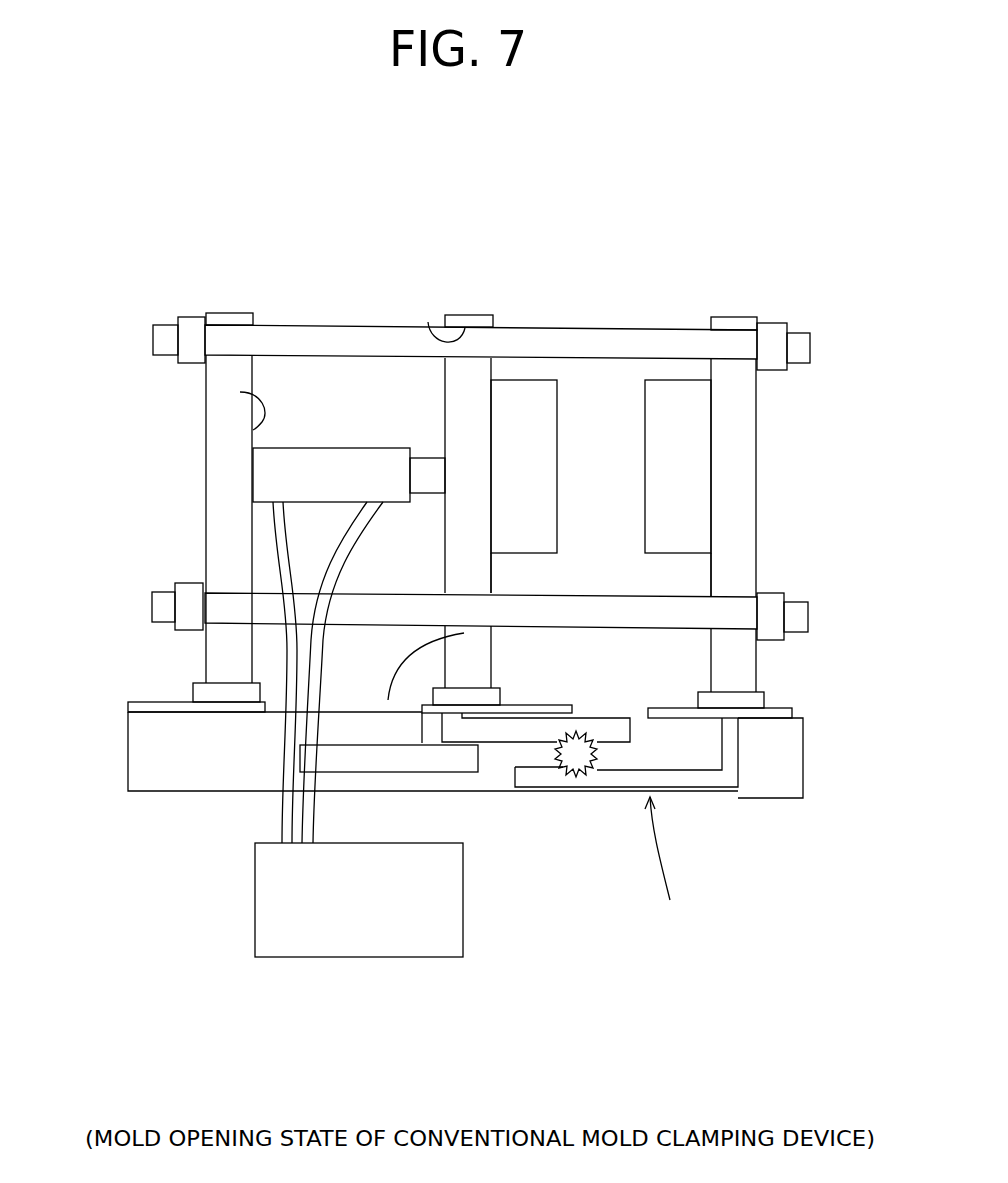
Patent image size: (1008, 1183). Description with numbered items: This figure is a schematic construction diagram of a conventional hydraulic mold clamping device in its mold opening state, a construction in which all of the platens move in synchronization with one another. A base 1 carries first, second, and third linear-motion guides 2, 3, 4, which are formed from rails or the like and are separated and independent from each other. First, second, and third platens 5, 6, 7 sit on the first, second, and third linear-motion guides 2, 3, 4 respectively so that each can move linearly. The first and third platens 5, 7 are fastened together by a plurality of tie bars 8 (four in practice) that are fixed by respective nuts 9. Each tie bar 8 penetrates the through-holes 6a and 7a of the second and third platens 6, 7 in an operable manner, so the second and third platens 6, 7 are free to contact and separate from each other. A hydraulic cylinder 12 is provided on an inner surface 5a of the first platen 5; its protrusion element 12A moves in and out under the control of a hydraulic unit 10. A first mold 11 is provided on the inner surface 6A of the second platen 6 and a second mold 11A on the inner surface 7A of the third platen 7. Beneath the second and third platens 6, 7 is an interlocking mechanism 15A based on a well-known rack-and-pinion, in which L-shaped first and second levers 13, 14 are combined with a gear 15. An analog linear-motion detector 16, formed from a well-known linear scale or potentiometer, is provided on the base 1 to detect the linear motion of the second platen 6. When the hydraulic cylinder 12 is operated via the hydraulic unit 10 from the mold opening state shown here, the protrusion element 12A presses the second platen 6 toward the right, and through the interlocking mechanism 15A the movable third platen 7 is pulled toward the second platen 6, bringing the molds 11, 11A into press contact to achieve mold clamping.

The base 1 is at (210, 772).
The first linear-motion guide 2 is at (187, 700).
The second linear-motion guide 3 is at (538, 705).
The third linear-motion guide 4 is at (787, 705).
The first platen 5 is at (230, 314).
The inner surface of first platen 5a is at (240, 392).
The second platen 6 is at (488, 313).
The through-hole of second platen 6a is at (428, 322).
The inner surface of second platen 6A is at (492, 575).
The third platen 7 is at (728, 473).
The inner surface of third platen 7A is at (707, 571).
The through-hole of third platen 7a is at (732, 600).
The tie bar 8 is at (678, 345).
The nut 9 is at (197, 316).
The hydraulic unit 10 is at (285, 942).
The first mold 11 is at (533, 400).
The second mold 11A is at (682, 434).
The hydraulic cylinder 12 is at (302, 448).
The protrusion element 12A is at (427, 458).
The first lever 13 is at (498, 742).
The second lever 14 is at (703, 789).
The gear 15 is at (571, 757).
The interlocking mechanism 15A is at (677, 866).
The analog linear-motion detector 16 is at (472, 772).